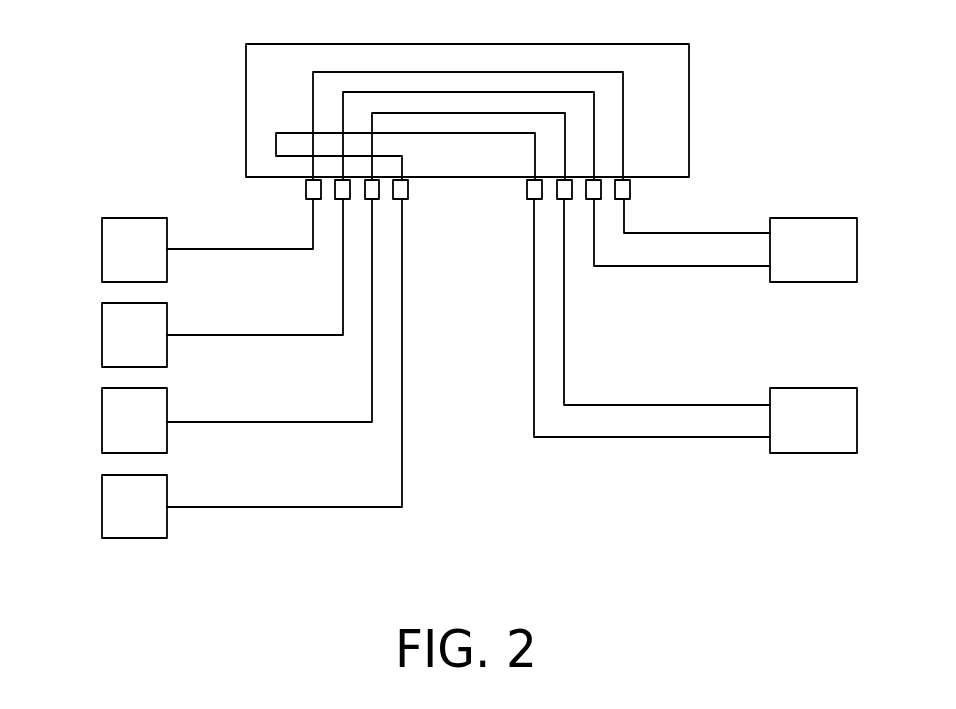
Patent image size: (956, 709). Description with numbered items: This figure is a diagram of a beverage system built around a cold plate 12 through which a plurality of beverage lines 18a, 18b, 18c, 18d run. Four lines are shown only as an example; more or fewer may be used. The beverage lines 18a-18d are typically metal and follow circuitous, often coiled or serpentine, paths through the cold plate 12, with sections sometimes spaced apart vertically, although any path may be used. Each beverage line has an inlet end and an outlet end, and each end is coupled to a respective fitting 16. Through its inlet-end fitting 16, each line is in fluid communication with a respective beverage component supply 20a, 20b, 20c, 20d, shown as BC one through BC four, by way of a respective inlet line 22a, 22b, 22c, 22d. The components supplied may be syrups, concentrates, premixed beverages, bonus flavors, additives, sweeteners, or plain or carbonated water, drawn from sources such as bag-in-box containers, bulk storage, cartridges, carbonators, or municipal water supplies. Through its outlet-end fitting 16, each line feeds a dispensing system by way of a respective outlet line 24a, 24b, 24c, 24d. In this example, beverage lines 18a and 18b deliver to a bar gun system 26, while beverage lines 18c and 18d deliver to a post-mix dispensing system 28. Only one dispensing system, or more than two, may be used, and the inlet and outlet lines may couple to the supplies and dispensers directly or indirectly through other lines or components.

The cold plate 12 is at (689, 71).
The fitting 16 is at (335, 199).
The beverage line 18a is at (326, 72).
The beverage line 18b is at (388, 92).
The beverage line 18c is at (451, 113).
The beverage line 18d is at (512, 133).
The beverage component supply 20a is at (102, 250).
The beverage component supply 20b is at (102, 336).
The beverage component supply 20c is at (102, 422).
The beverage component supply 20d is at (102, 507).
The inlet line 22a is at (252, 249).
The inlet line 22b is at (252, 335).
The inlet line 22c is at (252, 422).
The inlet line 22d is at (252, 507).
The outlet line 24a is at (728, 233).
The outlet line 24b is at (680, 266).
The outlet line 24c is at (682, 405).
The outlet line 24d is at (682, 437).
The bar gun system 26 is at (800, 218).
The post-mix dispensing system 28 is at (813, 388).